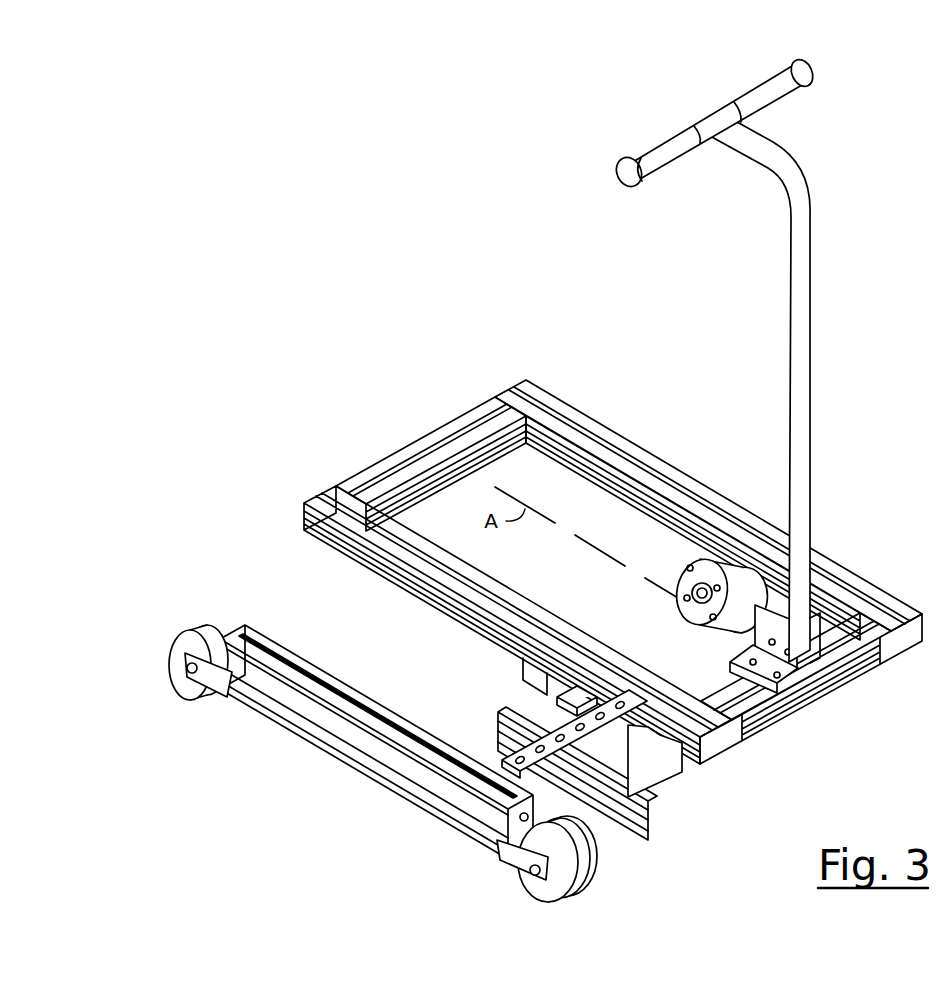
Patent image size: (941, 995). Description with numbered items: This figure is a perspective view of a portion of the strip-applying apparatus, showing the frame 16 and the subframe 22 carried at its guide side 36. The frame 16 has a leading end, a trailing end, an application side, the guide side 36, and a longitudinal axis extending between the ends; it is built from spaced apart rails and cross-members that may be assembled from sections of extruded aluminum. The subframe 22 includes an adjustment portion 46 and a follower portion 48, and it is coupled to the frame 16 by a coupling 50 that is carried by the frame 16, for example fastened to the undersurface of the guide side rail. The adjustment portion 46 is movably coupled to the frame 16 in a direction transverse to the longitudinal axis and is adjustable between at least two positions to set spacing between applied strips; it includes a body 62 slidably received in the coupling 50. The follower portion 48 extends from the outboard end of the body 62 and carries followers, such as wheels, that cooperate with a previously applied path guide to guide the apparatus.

The frame 16 is at (717, 768).
The subframe 22 is at (355, 810).
The guide side 36 is at (478, 633).
The adjustment portion 46 is at (602, 793).
The follower portion 48 is at (303, 743).
The coupling 50 is at (665, 788).
The body 62 is at (527, 727).